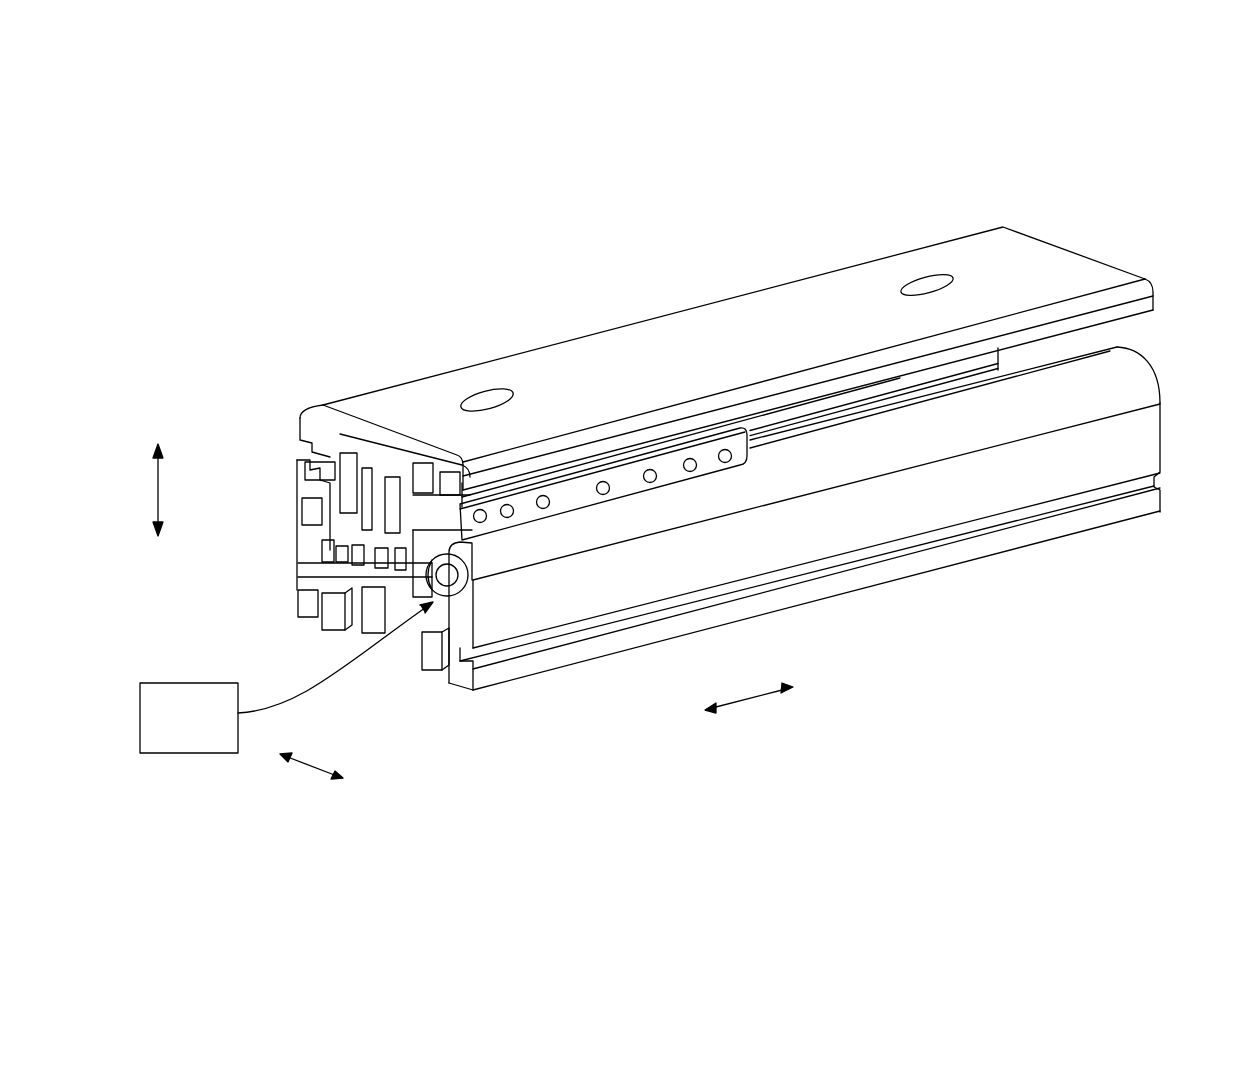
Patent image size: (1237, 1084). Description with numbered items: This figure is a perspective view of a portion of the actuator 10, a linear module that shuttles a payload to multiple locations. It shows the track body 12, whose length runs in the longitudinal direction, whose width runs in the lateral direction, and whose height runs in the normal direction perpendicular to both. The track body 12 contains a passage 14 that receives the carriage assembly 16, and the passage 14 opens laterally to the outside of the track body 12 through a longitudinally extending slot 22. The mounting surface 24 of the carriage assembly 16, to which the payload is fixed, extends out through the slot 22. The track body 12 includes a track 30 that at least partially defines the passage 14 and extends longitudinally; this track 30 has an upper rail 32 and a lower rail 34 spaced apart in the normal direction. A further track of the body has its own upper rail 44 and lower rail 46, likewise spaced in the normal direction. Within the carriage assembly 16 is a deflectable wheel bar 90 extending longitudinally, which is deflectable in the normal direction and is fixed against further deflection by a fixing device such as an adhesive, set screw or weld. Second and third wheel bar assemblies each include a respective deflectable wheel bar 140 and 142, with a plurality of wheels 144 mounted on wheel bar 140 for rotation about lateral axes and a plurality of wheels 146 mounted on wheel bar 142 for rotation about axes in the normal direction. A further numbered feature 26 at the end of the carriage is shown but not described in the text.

The actuator 10 is at (1127, 194).
The track body 12 is at (688, 323).
The passage 14 is at (880, 386).
The carriage assembly 16 is at (345, 573).
The longitudinally extending slot 22 is at (1103, 345).
The mounting surface 24 is at (668, 468).
The slot 26 is at (352, 460).
The track 30 is at (393, 607).
The upper rail 32 is at (472, 545).
The lower rail 34 is at (441, 650).
The upper rail 44 is at (325, 470).
The lower rail 46 is at (340, 553).
The deflectable wheel bar 90 is at (385, 576).
The deflectable wheel bar 140 is at (365, 578).
The deflectable wheel bar 142 is at (332, 542).
The plurality of wheels 144 is at (392, 588).
The plurality of wheels 146 is at (312, 510).